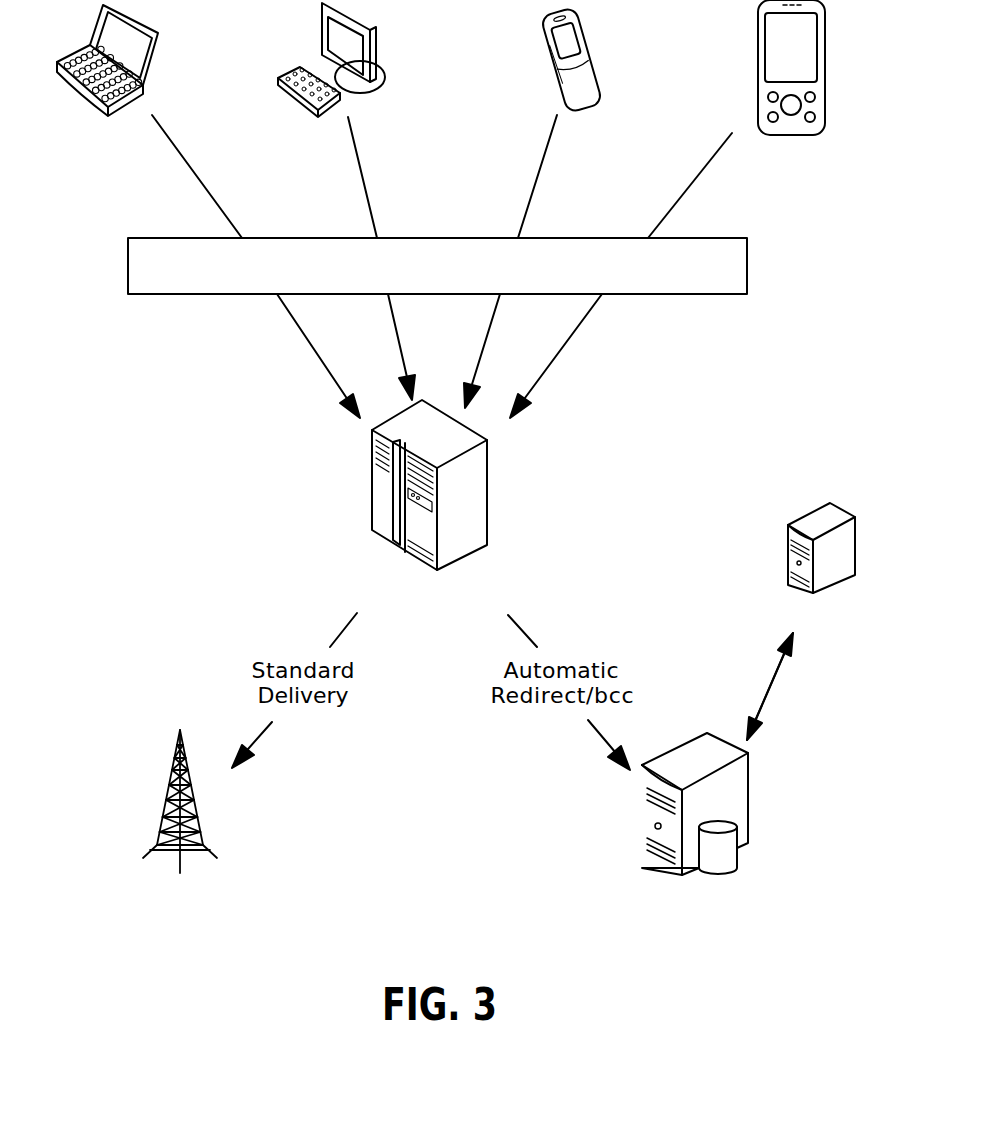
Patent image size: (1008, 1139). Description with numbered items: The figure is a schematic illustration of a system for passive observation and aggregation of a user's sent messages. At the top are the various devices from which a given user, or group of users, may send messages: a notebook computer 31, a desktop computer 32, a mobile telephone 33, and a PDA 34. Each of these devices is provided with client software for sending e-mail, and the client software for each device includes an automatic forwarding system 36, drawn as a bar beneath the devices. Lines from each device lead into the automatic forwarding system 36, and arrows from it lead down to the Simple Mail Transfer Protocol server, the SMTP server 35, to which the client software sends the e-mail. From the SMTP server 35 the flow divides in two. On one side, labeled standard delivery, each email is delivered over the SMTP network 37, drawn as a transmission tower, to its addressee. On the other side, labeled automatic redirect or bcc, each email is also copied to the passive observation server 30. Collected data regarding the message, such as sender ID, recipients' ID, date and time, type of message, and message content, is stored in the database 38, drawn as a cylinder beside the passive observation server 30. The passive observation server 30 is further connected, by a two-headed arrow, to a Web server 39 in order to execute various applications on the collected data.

The passive observation server 30 is at (748, 782).
The notebook computer 31 is at (155, 57).
The desktop computer 32 is at (377, 45).
The mobile telephone 33 is at (587, 43).
The PDA 34 is at (758, 60).
The SMTP server 35 is at (487, 487).
The automatic forwarding system 36 is at (128, 263).
The SMTP network 37 is at (172, 790).
The database 38 is at (737, 852).
The Web server 39 is at (788, 552).